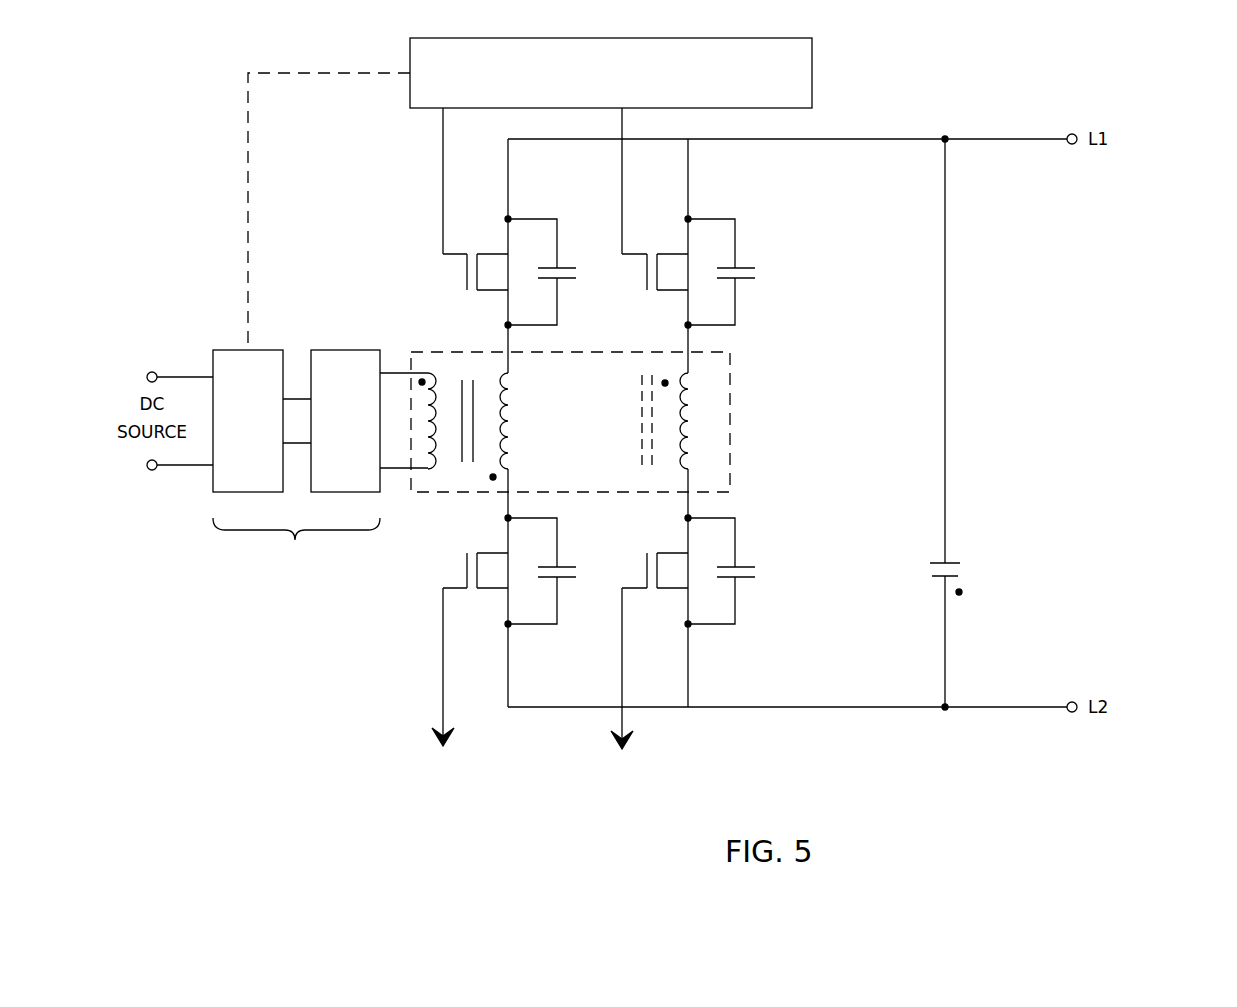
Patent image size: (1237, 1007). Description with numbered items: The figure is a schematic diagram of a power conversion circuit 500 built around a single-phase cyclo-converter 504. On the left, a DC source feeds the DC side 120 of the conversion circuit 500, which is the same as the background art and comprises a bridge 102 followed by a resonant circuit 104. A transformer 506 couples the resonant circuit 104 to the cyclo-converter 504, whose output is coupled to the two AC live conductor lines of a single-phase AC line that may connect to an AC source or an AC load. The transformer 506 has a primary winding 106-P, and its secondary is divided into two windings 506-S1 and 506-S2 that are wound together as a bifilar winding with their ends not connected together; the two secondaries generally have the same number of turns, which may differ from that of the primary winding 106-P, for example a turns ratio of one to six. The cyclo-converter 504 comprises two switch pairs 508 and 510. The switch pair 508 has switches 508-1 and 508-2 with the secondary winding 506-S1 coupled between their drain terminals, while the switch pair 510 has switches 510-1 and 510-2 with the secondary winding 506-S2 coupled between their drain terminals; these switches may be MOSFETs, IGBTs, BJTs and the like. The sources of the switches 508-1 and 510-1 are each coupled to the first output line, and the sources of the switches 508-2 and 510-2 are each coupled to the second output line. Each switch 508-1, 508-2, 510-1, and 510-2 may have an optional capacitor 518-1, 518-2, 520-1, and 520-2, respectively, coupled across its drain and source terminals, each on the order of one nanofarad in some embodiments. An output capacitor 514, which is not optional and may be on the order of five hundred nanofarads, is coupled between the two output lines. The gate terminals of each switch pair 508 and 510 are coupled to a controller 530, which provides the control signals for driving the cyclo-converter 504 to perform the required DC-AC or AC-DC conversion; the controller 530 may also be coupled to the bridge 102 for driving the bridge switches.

The power conversion circuit 500 is at (1226, 67).
The controller 530 is at (706, 86).
The single-phase cyclo-converter 504 is at (954, 100).
The output capacitor 514 is at (946, 545).
The switch pair 508 is at (465, 163).
The switch pair 510 is at (657, 178).
The switch 508-1 is at (474, 248).
The switch 508-2 is at (474, 595).
The switch 510-1 is at (652, 248).
The switch 510-2 is at (652, 595).
The capacitor 518-1 is at (558, 313).
The capacitor 518-2 is at (558, 531).
The capacitor 520-1 is at (737, 313).
The capacitor 520-2 is at (737, 531).
The transformer 506 is at (730, 385).
The secondary winding 506-S1 is at (512, 432).
The secondary winding 506-S2 is at (690, 432).
The primary winding 106-P is at (427, 470).
The bridge 102 is at (262, 425).
The resonant circuit 104 is at (359, 425).
The DC side 120 is at (296, 461).